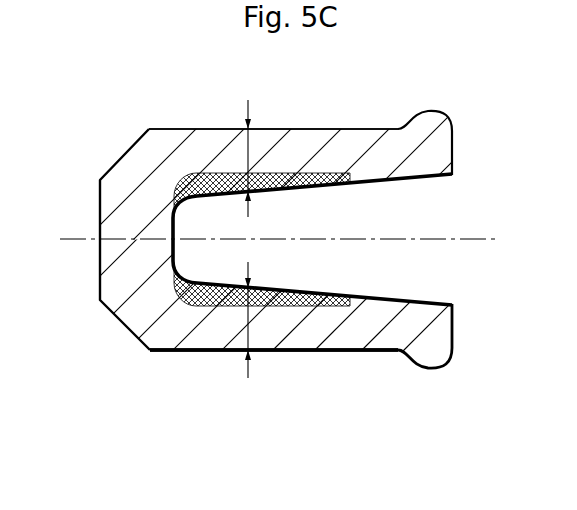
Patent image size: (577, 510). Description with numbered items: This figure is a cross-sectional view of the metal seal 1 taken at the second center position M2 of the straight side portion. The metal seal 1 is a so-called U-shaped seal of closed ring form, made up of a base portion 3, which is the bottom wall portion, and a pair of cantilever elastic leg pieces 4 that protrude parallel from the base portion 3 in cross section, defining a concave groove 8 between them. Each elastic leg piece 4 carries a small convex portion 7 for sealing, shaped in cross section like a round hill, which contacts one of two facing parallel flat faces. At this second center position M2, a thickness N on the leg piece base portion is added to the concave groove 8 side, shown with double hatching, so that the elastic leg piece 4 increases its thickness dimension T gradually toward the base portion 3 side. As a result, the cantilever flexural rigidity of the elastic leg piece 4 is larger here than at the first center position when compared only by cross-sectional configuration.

The metal seal 1 is at (88, 172).
The base portion 3 is at (125, 281).
The elastic leg piece 4 is at (328, 129).
The small convex portion 7 is at (431, 121).
The concave groove 8 is at (400, 273).
The thickness on leg piece base portion N is at (193, 180).
The thickness dimension T is at (248, 146).
The second center position M2 is at (198, 368).